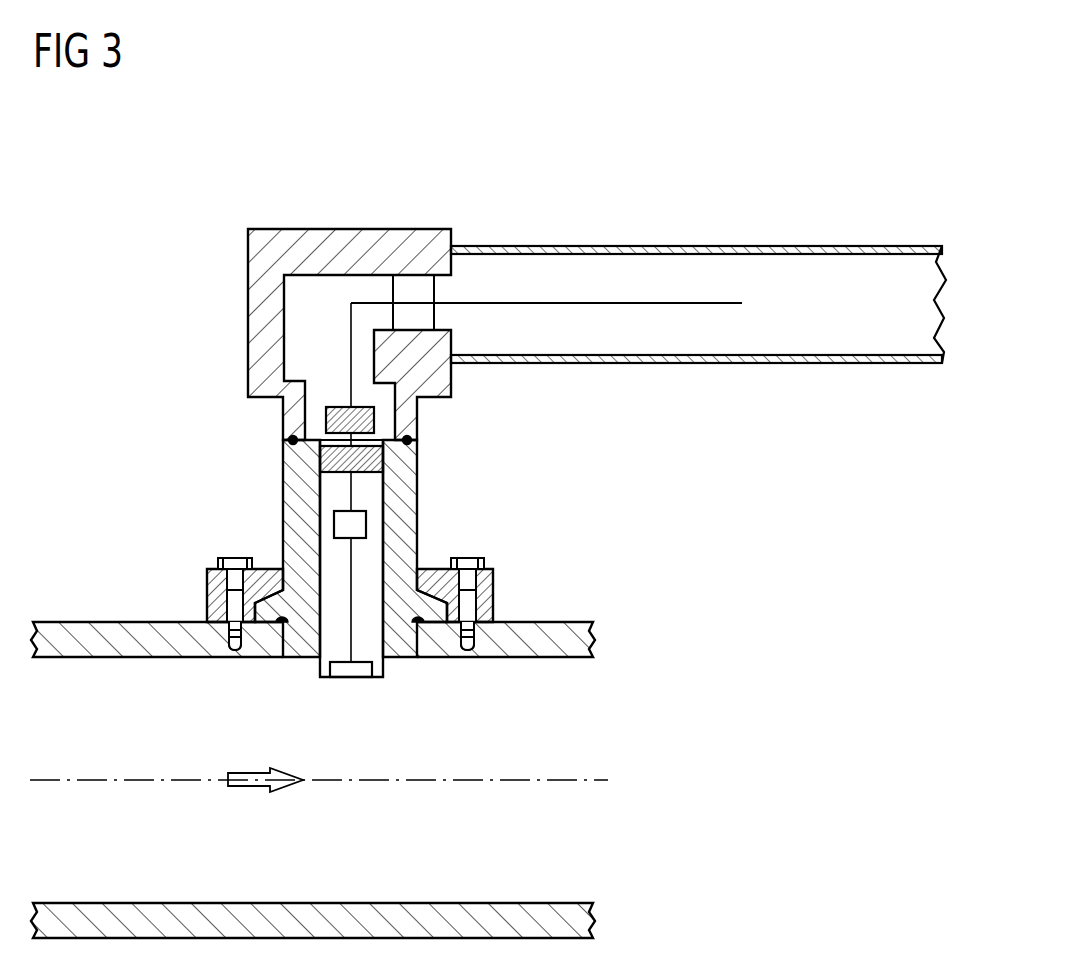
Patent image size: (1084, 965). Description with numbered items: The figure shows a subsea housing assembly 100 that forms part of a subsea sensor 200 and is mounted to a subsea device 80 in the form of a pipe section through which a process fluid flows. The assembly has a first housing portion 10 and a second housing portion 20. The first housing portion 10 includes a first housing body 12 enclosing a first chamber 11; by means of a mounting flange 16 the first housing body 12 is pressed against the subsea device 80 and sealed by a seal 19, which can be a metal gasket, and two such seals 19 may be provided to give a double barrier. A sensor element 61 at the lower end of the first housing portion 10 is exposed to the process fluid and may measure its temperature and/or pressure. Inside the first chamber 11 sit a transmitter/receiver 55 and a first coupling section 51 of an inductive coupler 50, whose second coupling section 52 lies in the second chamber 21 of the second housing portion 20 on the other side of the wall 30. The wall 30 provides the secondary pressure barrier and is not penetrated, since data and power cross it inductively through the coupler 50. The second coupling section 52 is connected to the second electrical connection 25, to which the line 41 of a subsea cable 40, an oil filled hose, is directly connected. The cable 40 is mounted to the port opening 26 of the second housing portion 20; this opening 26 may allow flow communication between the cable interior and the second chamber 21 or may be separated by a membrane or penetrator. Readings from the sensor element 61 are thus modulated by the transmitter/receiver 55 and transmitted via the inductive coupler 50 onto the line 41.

The subsea sensor 200 is at (128, 157).
The second housing portion 20 is at (190, 262).
The second chamber 21 is at (298, 308).
The second electrical connection 25 is at (348, 328).
The port opening 26 is at (422, 290).
The subsea cable 40 is at (728, 200).
The line 41 is at (628, 302).
The subsea housing assembly 100 is at (118, 430).
The first housing portion 10 is at (192, 497).
The first chamber 11 is at (338, 485).
The first housing body 12 is at (283, 523).
The wall 30 is at (330, 442).
The inductive coupler 50 is at (468, 408).
The first coupling section 51 is at (365, 460).
The second coupling section 52 is at (360, 420).
The transmitter/receiver 55 is at (360, 523).
The mounting flange 16 is at (485, 597).
The seal 19 is at (281, 627).
The sensor element 61 is at (357, 670).
The subsea device 80 is at (113, 630).